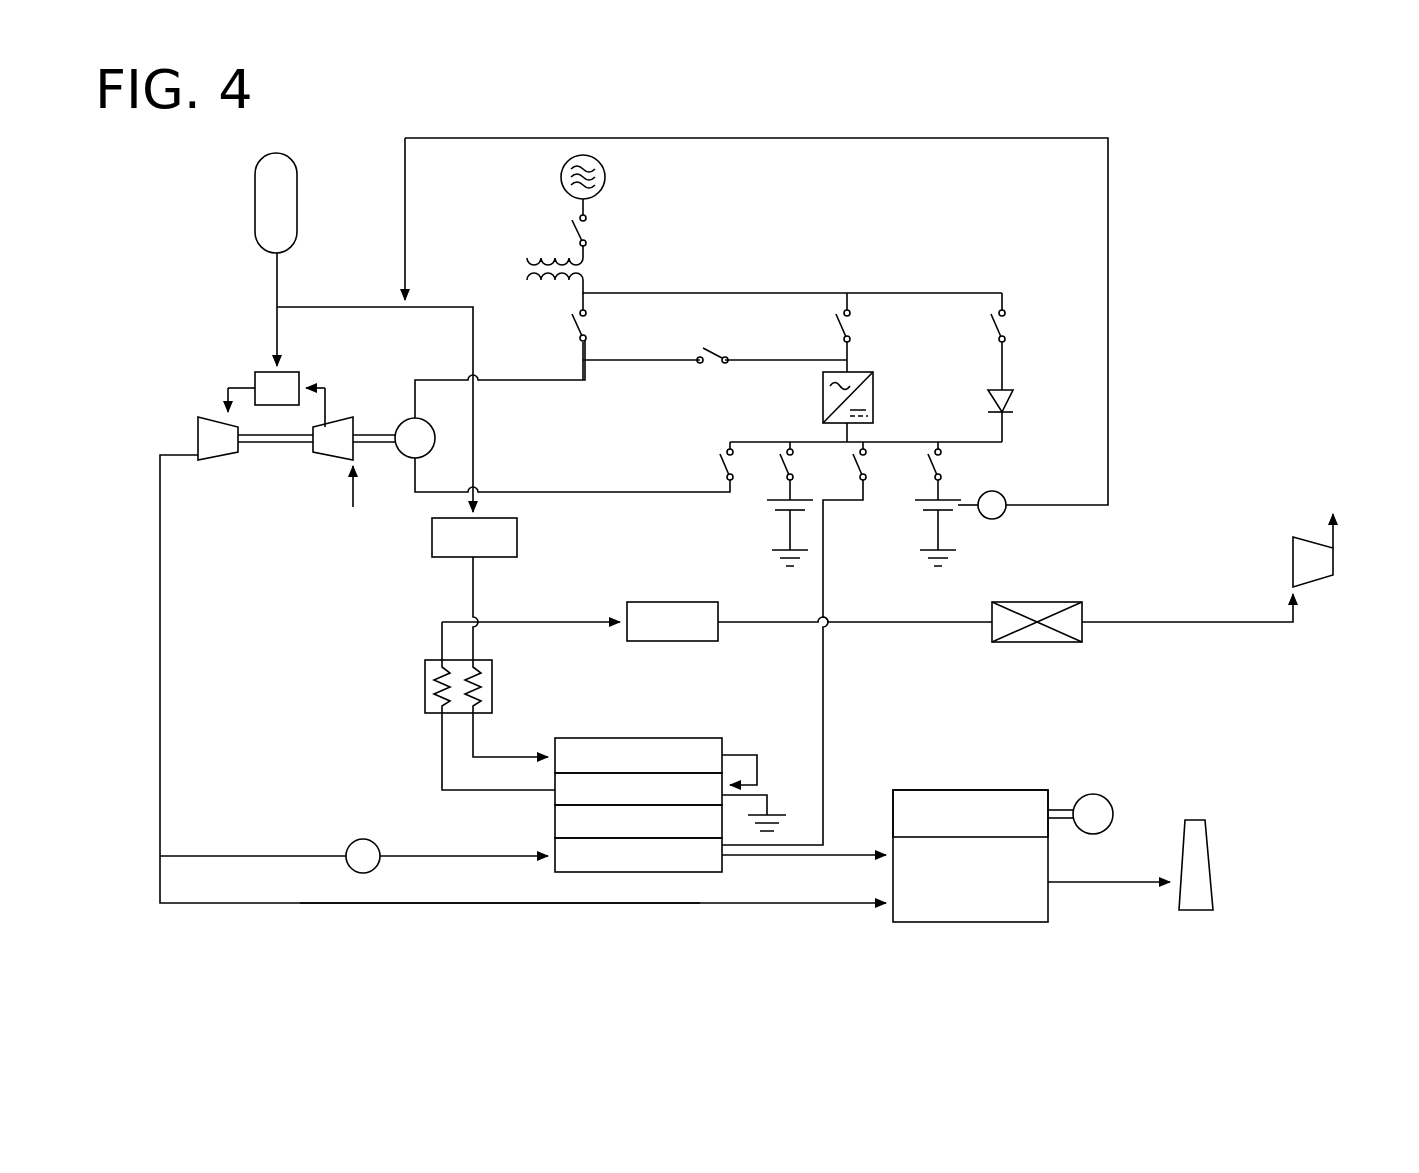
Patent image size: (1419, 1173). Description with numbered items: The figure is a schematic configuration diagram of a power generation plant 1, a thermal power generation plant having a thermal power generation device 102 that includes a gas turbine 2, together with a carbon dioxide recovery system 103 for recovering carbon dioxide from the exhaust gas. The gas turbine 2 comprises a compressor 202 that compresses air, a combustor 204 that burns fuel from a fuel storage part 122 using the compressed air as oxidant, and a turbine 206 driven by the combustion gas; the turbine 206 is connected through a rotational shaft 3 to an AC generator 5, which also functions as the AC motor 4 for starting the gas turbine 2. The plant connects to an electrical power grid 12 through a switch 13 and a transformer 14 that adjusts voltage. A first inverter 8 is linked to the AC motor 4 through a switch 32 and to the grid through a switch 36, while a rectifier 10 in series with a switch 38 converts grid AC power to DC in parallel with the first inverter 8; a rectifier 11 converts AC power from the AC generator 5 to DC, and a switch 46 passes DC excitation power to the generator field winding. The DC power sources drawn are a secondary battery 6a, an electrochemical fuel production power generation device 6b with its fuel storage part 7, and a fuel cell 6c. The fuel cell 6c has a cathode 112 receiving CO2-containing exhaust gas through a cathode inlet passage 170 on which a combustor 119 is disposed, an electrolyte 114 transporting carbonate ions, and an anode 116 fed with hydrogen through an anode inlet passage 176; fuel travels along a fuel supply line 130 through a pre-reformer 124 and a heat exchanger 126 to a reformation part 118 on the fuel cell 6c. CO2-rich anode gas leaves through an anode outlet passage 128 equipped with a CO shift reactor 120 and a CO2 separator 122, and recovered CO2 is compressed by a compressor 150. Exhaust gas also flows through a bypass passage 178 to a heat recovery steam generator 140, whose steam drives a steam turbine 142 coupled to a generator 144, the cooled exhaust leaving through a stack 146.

The power generation plant 1 is at (1312, 153).
The gas turbine 2 is at (253, 400).
The thermal power generation device 102 is at (270, 400).
The rotational shaft 3 is at (288, 452).
The AC motor 4 is at (442, 438).
The AC generator 5 is at (435, 440).
The secondary battery 6a is at (770, 532).
The electrochemical fuel production power generation device 6b is at (915, 532).
The fuel cell 6c is at (644, 774).
The fuel storage part 7 is at (1000, 495).
The first inverter 8 is at (873, 398).
The rectifier 10 is at (1046, 416).
The rectifier 11 is at (1014, 402).
The electrical power grid 12 is at (606, 178).
The switch 13 is at (572, 222).
The transformer 14 is at (548, 258).
The switch (first switch) 32 is at (714, 350).
The switch (first switch) 36 is at (838, 326).
The switch (second switch) 38 is at (992, 326).
The switch 46 is at (720, 465).
The carbon dioxide recovery system 103 is at (1234, 318).
The cathode 112 is at (555, 865).
The electrolyte 114 is at (555, 830).
The anode 116 is at (555, 798).
The reformation part 118 is at (630, 738).
The combustor 119 is at (362, 838).
The CO shift reactor 120 is at (672, 600).
The fuel storage part / CO2 separator 122 is at (300, 172).
The pre-reformer 124 is at (517, 536).
The heat exchanger 126 is at (425, 690).
The anode outlet passage 128 is at (565, 618).
The fuel supply line 130 is at (572, 328).
The heat recovery steam generator 140 is at (965, 922).
The steam turbine 142 is at (975, 790).
The generator 144 is at (1093, 794).
The stack 146 is at (1213, 855).
The compressor 150 is at (1293, 562).
The cathode inlet passage 170 is at (240, 855).
The anode inlet passage 176 is at (746, 752).
The bypass passage 178 is at (580, 905).
The compressor 202 is at (330, 425).
The combustor 204 is at (257, 372).
The turbine 206 is at (210, 416).